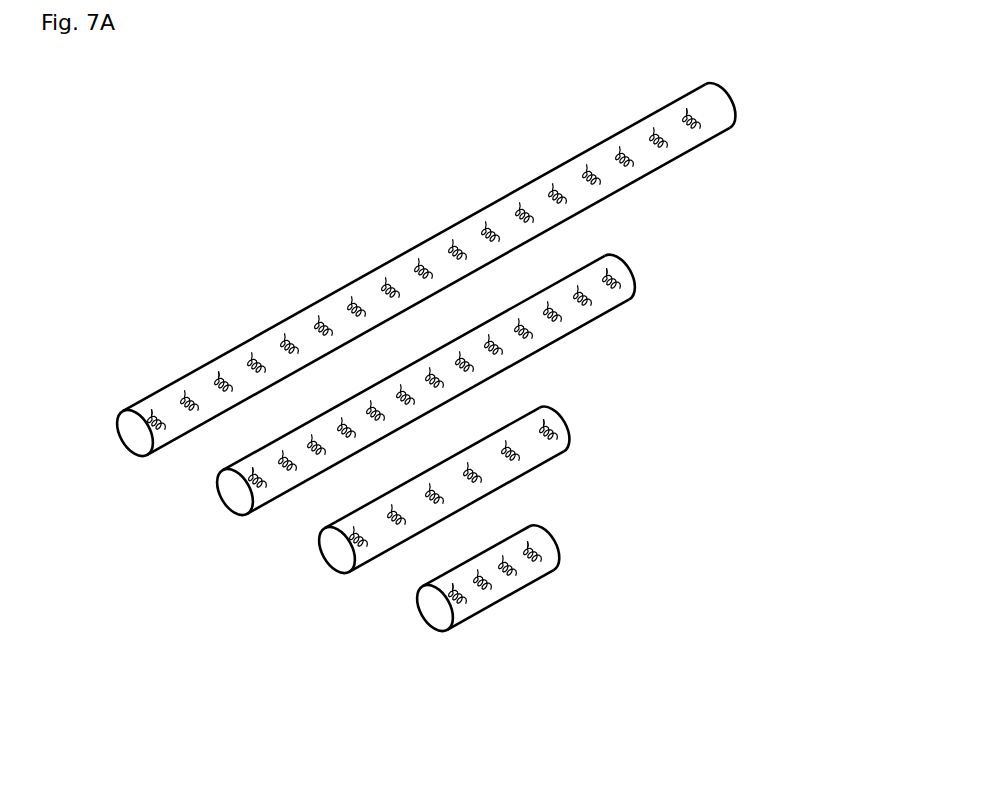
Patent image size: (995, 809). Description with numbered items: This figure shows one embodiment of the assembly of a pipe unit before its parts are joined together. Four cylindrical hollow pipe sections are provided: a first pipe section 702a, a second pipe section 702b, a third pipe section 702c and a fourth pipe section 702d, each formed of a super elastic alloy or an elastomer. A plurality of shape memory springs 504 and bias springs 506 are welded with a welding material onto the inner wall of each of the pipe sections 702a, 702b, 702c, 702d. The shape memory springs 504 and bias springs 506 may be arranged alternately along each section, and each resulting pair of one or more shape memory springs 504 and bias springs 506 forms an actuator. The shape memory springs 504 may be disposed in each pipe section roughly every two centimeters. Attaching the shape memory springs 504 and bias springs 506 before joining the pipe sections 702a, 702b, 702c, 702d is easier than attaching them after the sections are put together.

The first pipe section 702a is at (738, 103).
The second pipe section 702b is at (634, 284).
The third pipe section 702c is at (564, 423).
The fourth pipe section 702d is at (557, 546).
The shape memory spring 504 is at (586, 165).
The bias spring 506 is at (552, 184).